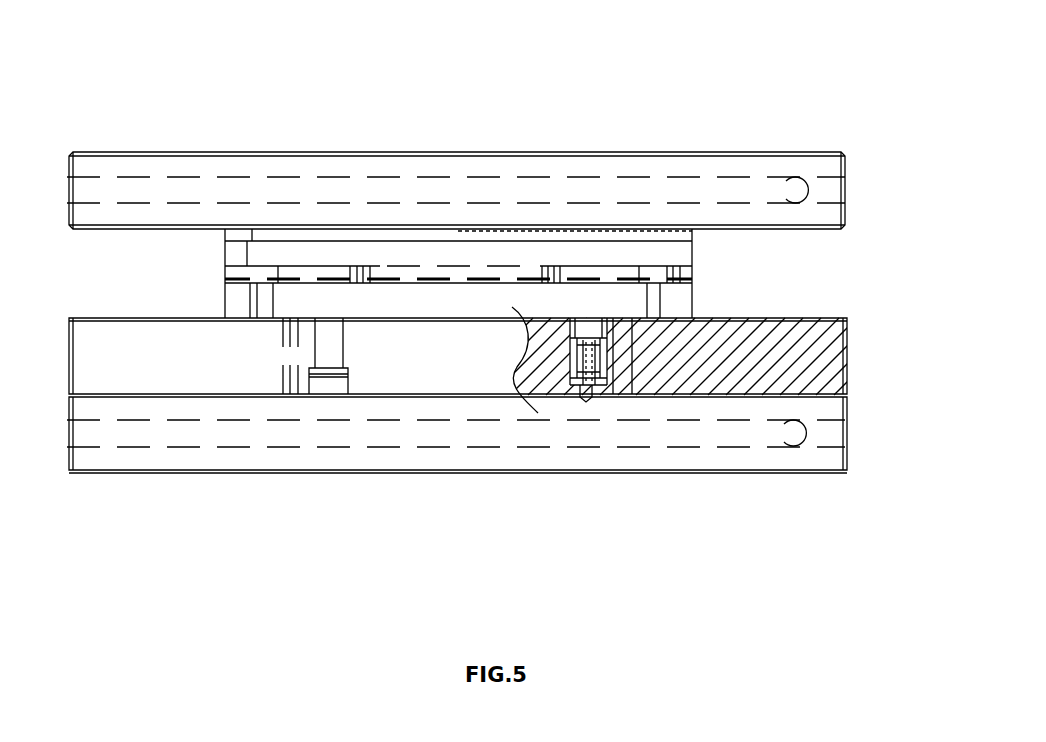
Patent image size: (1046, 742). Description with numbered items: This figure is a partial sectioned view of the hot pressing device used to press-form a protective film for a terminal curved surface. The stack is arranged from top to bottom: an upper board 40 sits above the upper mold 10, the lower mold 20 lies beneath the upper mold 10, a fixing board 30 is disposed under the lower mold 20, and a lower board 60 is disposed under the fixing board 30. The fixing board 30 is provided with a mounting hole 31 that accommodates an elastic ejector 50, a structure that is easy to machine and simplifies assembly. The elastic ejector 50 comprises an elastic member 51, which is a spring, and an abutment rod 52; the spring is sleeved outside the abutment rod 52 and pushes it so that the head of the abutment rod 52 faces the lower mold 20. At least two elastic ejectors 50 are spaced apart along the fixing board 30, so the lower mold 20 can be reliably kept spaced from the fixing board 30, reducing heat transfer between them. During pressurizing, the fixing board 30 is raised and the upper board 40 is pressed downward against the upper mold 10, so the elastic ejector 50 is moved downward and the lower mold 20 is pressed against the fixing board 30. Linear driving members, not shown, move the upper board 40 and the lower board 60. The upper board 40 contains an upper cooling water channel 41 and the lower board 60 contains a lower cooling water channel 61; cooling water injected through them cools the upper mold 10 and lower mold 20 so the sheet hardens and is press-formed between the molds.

The upper mold 10 is at (625, 255).
The lower mold 20 is at (672, 304).
The fixing board 30 is at (772, 370).
The mounting hole 31 is at (605, 367).
The upper board 40 is at (822, 188).
The upper cooling water channel 41 is at (373, 192).
The elastic ejector 50 is at (331, 352).
The elastic member 51 is at (569, 393).
The abutment rod 52 is at (588, 395).
The lower board 60 is at (820, 451).
The lower cooling water channel 61 is at (388, 432).